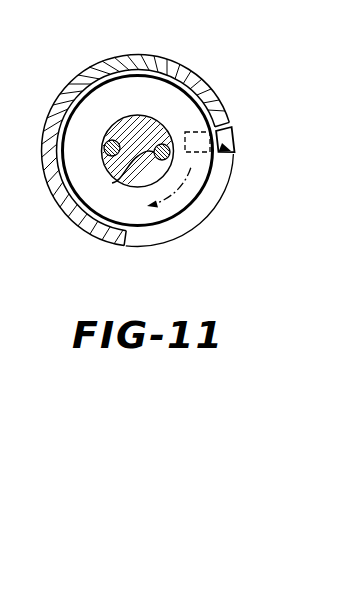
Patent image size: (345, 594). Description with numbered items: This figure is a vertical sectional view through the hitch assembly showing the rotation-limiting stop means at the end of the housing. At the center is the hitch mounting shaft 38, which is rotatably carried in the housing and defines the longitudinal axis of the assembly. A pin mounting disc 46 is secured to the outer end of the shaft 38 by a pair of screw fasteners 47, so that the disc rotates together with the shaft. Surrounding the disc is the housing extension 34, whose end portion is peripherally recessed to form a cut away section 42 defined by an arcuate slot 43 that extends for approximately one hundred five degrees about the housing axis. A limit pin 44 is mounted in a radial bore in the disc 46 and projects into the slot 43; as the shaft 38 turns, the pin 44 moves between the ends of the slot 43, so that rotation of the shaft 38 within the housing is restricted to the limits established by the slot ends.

The housing extension 34 is at (87, 73).
The pin mounting disc 46 is at (158, 92).
The hitch mounting shaft 38 is at (150, 117).
The screw fasteners 47 is at (113, 183).
The limit pin 44 is at (232, 151).
The arcuate slot 43 is at (203, 209).
The cut away section 42 is at (127, 240).